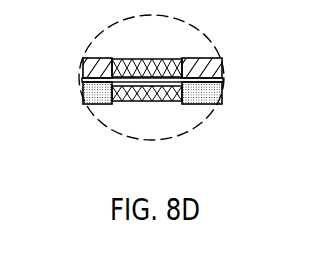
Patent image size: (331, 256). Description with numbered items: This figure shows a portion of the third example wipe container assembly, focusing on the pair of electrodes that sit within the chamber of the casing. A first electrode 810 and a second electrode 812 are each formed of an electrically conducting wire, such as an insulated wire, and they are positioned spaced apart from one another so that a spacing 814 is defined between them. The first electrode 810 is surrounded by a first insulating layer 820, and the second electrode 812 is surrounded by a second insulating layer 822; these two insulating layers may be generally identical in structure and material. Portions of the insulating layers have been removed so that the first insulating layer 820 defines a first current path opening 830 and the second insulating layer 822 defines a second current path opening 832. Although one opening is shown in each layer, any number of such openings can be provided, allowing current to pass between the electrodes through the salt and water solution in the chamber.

The first electrode 810 is at (178, 63).
The first insulating layer 820 is at (95, 62).
The second electrode 812 is at (170, 87).
The second insulating layer 822 is at (96, 103).
The first current path opening 830 is at (146, 80).
The spacing 814 is at (157, 80).
The second current path opening 832 is at (127, 82).